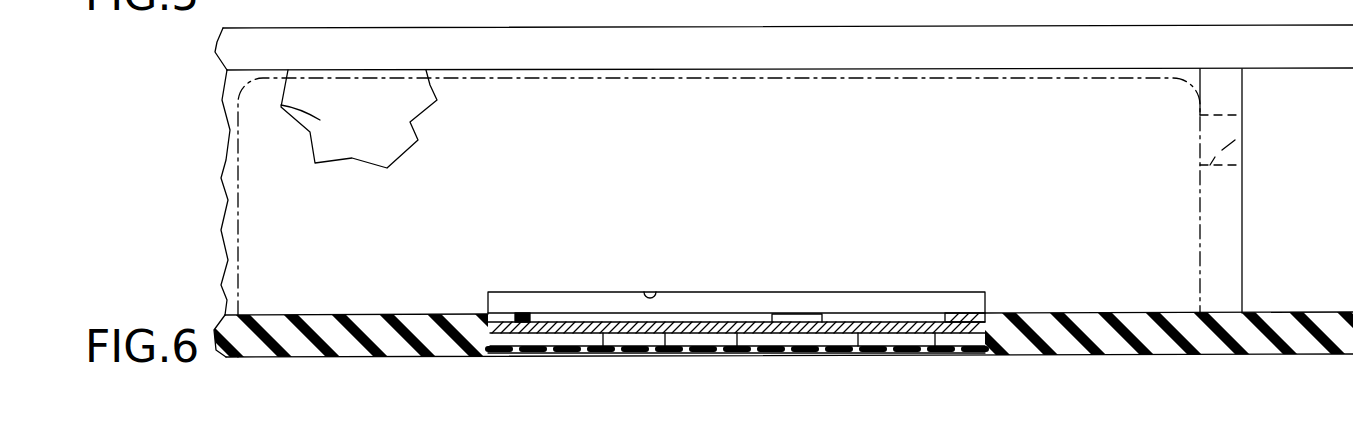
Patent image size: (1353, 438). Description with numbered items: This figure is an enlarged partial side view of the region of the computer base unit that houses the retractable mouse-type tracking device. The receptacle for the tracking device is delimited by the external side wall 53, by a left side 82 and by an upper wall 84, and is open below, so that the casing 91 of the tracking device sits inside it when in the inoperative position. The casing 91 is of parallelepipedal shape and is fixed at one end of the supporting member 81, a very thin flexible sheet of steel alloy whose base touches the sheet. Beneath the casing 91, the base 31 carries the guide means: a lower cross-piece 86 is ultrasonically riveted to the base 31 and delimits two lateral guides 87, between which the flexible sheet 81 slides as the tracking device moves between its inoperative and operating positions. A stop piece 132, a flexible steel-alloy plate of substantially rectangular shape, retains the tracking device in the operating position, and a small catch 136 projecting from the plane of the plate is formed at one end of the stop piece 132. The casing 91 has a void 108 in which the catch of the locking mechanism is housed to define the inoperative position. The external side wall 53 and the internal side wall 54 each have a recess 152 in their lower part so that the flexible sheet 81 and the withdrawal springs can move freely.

The base 31 is at (1224, 330).
The external side wall 53 is at (281, 105).
The internal side wall 54 is at (288, 168).
The supporting member 81 is at (605, 350).
The left side 82 is at (1223, 238).
The upper wall 84 is at (1273, 48).
The lower cross-piece 86 is at (548, 352).
The lateral guides 87 is at (518, 318).
The casing 91 is at (1033, 108).
The void 108 is at (1247, 135).
The stop piece 132 is at (718, 345).
The small catch 136 is at (822, 328).
The recess 152 is at (656, 292).